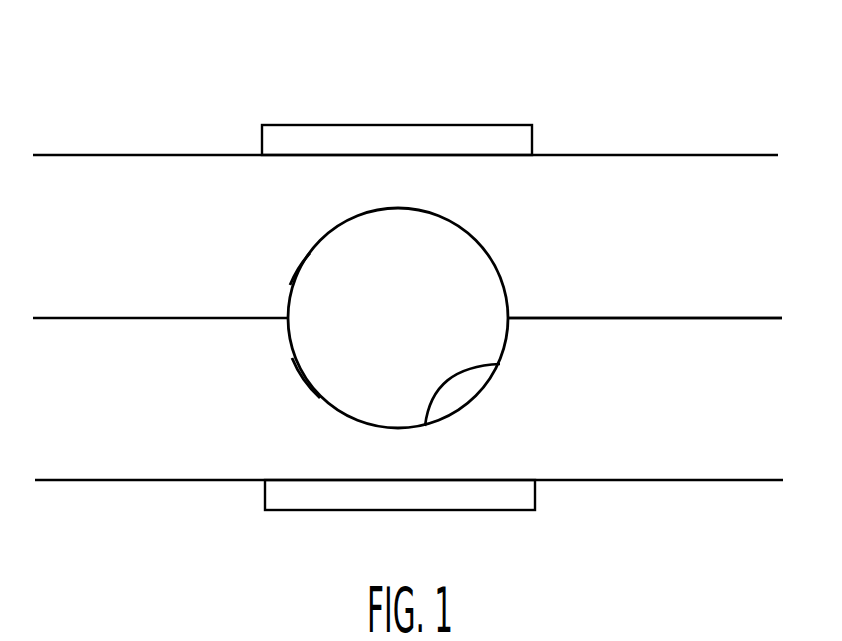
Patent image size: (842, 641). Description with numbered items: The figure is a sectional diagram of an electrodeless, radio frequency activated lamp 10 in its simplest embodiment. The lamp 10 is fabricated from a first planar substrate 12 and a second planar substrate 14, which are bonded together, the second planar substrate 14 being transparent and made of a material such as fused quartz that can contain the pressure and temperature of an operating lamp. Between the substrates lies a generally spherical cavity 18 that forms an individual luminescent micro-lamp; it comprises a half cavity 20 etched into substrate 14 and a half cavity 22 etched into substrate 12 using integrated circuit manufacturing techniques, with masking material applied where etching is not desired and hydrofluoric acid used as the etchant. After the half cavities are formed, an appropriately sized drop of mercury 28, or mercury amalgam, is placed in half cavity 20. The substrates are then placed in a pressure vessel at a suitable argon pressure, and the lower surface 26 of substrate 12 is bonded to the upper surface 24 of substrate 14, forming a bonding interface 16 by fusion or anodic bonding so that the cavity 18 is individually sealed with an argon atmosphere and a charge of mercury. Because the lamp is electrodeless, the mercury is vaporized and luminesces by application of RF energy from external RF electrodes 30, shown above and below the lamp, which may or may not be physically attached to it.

The lamp 10 is at (646, 64).
The first planar substrate 12 is at (673, 164).
The second planar substrate 14 is at (701, 472).
The bonding interface 16 is at (100, 320).
The cavity 18 is at (490, 245).
The half cavity 20 is at (306, 380).
The half cavity 22 is at (303, 262).
The upper surface 24 is at (745, 318).
The lower surface 26 is at (700, 318).
The drop of mercury 28 is at (462, 398).
The external RF electrodes 30 is at (532, 127).